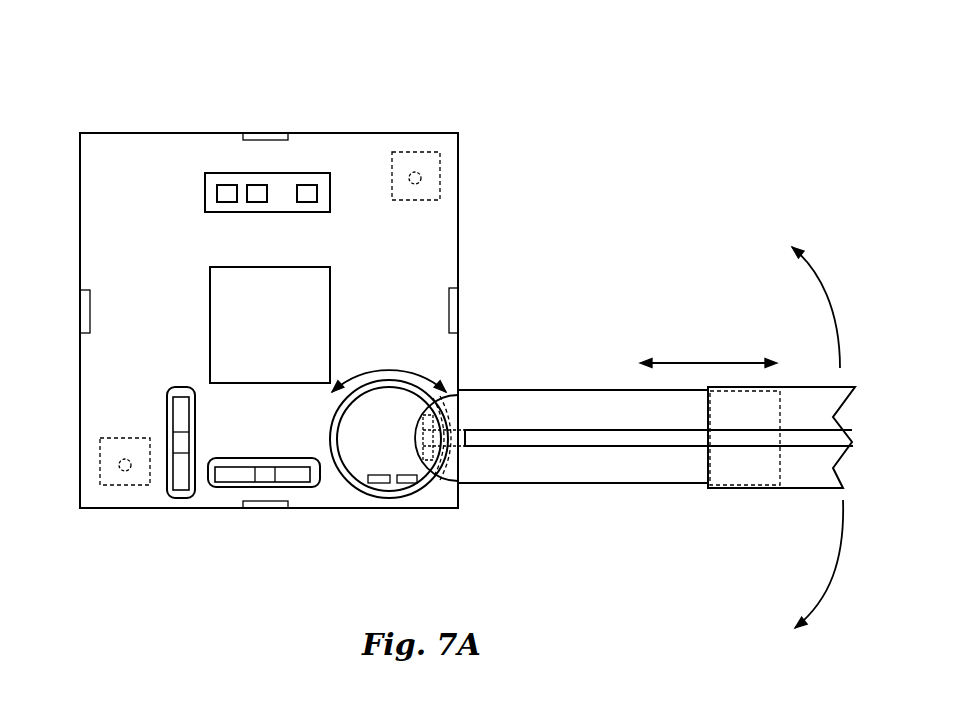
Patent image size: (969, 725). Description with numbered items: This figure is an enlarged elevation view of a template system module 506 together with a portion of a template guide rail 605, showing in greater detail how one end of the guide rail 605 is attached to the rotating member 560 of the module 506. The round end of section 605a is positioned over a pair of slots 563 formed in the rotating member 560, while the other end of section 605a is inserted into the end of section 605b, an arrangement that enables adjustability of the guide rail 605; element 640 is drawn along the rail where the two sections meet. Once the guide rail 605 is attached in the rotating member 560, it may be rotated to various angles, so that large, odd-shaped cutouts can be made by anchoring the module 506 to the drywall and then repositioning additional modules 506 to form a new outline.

The module 506 is at (268, 88).
The rotating member 560 is at (387, 395).
The slots 563 is at (465, 446).
The guide rail 605 is at (611, 437).
The section 605a is at (527, 483).
The section 605b is at (813, 488).
The channel 640 is at (670, 432).